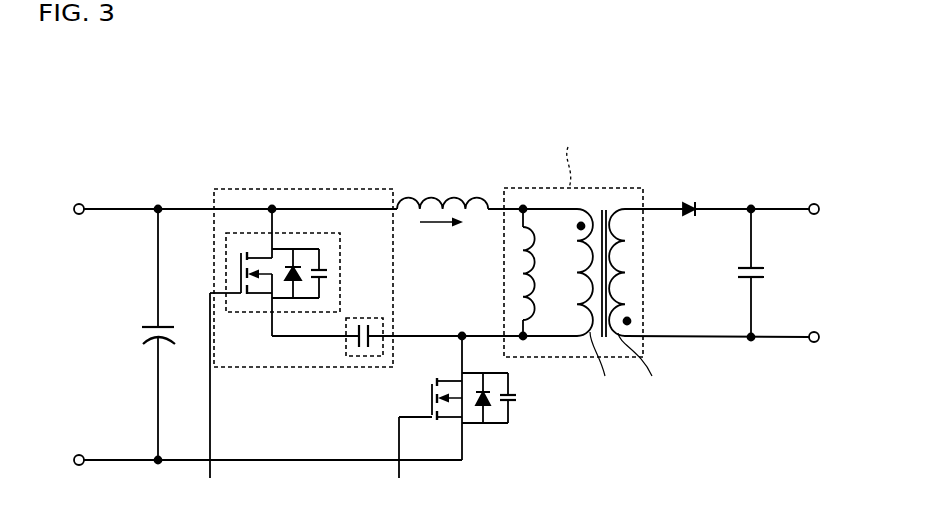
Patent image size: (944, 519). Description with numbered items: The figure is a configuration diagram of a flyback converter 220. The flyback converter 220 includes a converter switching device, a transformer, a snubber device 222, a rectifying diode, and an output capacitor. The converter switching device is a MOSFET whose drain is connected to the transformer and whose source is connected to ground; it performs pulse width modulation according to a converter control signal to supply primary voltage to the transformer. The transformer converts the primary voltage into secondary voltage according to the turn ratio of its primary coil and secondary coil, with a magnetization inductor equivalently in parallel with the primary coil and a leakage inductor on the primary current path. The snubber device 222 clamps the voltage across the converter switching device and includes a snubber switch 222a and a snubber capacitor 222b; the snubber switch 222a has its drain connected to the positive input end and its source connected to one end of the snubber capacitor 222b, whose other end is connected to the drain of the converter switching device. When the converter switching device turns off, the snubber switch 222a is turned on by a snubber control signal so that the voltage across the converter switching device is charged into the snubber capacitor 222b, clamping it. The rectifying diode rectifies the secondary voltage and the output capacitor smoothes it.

The flyback converter 220 is at (68, 74).
The snubber device 222 is at (307, 188).
The snubber switch 222a is at (340, 272).
The snubber capacitor 222b is at (345, 347).